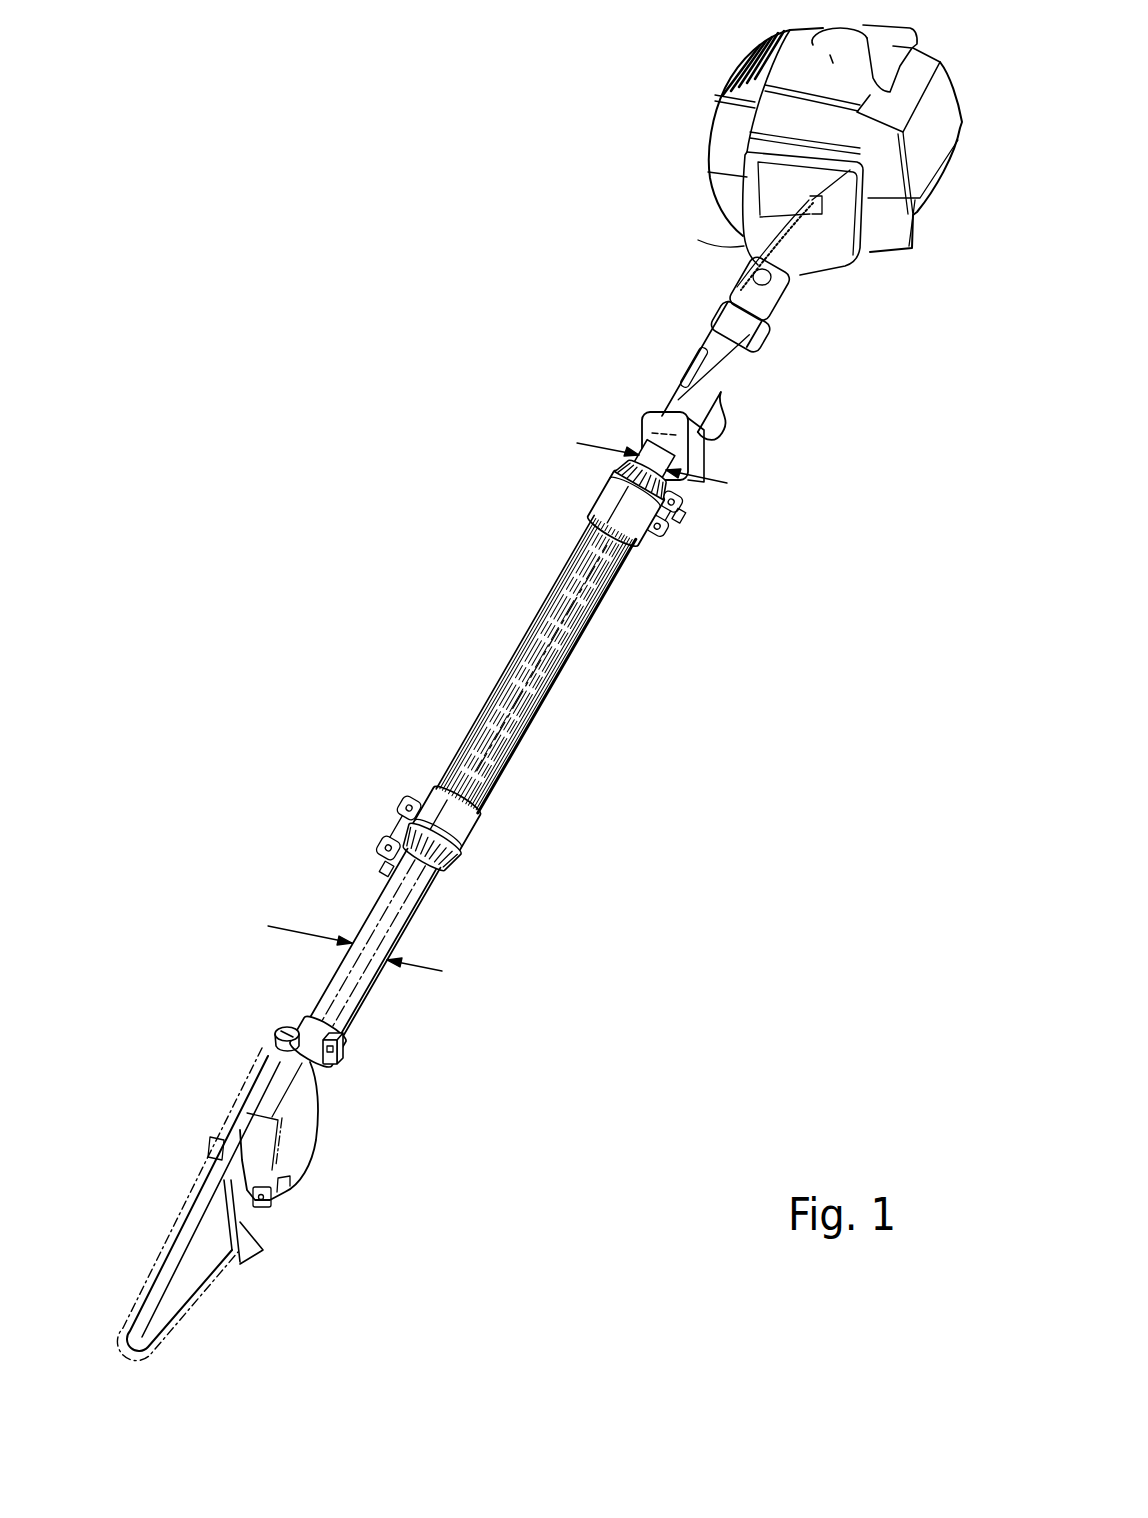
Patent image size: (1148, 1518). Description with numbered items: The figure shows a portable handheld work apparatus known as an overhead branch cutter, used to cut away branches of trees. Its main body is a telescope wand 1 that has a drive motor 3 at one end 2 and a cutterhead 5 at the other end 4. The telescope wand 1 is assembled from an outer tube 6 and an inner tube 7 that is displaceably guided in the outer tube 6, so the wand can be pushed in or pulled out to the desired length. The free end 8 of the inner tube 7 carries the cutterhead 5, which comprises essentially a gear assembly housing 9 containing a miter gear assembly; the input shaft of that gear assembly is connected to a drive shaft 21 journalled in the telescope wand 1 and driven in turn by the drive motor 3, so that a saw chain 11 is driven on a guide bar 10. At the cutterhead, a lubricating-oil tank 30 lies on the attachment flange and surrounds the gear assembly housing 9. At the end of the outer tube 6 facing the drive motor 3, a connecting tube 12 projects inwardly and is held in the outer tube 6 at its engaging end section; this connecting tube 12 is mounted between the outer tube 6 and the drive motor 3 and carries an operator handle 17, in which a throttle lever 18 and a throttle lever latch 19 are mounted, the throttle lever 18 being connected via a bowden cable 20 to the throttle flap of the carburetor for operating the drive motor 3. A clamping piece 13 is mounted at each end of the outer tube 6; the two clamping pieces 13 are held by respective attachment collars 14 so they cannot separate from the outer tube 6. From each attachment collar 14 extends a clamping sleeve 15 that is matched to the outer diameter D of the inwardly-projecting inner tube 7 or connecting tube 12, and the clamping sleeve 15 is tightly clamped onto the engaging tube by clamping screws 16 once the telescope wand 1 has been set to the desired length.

The telescope wand 1 is at (412, 627).
The end 2 is at (768, 466).
The drive motor 3 is at (697, 133).
The other end 4 is at (375, 1040).
The cutterhead 5 is at (195, 1145).
The outer tube 6 is at (582, 630).
The inner tube 7 is at (380, 968).
The free end 8 is at (315, 1025).
The gear assembly housing 9 is at (332, 1062).
The guide bar 10 is at (190, 1292).
The saw chain 11 is at (158, 1258).
The connecting tube 12 is at (652, 420).
The clamping piece 13 is at (672, 562).
The attachment collar 14 is at (600, 497).
The clamping sleeve 15 is at (617, 478).
The clamping screws 16 is at (685, 520).
The operator handle 17 is at (735, 375).
The throttle lever 18 is at (718, 430).
The throttle lever latch 19 is at (688, 355).
The bowden cable 20 is at (757, 252).
The drive shaft 21 is at (522, 705).
The lubricating-oil tank 30 is at (272, 1095).
The outer diameter D is at (580, 443).